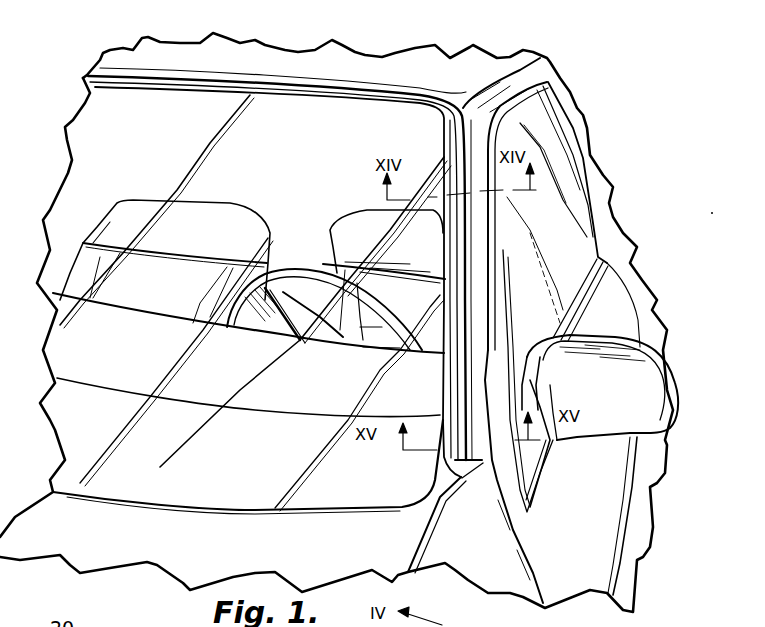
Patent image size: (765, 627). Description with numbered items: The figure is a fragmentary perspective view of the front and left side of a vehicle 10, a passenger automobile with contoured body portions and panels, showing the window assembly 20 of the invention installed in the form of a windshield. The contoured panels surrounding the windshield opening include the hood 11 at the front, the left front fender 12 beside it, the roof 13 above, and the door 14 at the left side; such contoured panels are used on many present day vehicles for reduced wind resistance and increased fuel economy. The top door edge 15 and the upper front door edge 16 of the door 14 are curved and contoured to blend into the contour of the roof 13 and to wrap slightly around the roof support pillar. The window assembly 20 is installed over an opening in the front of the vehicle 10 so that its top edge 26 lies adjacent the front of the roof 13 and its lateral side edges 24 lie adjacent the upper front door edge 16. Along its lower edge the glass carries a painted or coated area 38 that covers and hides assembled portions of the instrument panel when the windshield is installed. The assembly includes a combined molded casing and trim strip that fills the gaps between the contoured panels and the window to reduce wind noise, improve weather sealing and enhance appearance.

The vehicle 10 is at (510, 36).
The hood 11 is at (214, 553).
The left front fender 12 is at (480, 539).
The roof 13 is at (228, 55).
The door 14 is at (598, 493).
The top door edge 15 is at (488, 83).
The upper front door edge 16 is at (465, 162).
The window assembly 20 is at (342, 82).
The lateral side edges 24 is at (480, 233).
The top edge 26 is at (157, 72).
The painted or coated area 38 is at (255, 412).